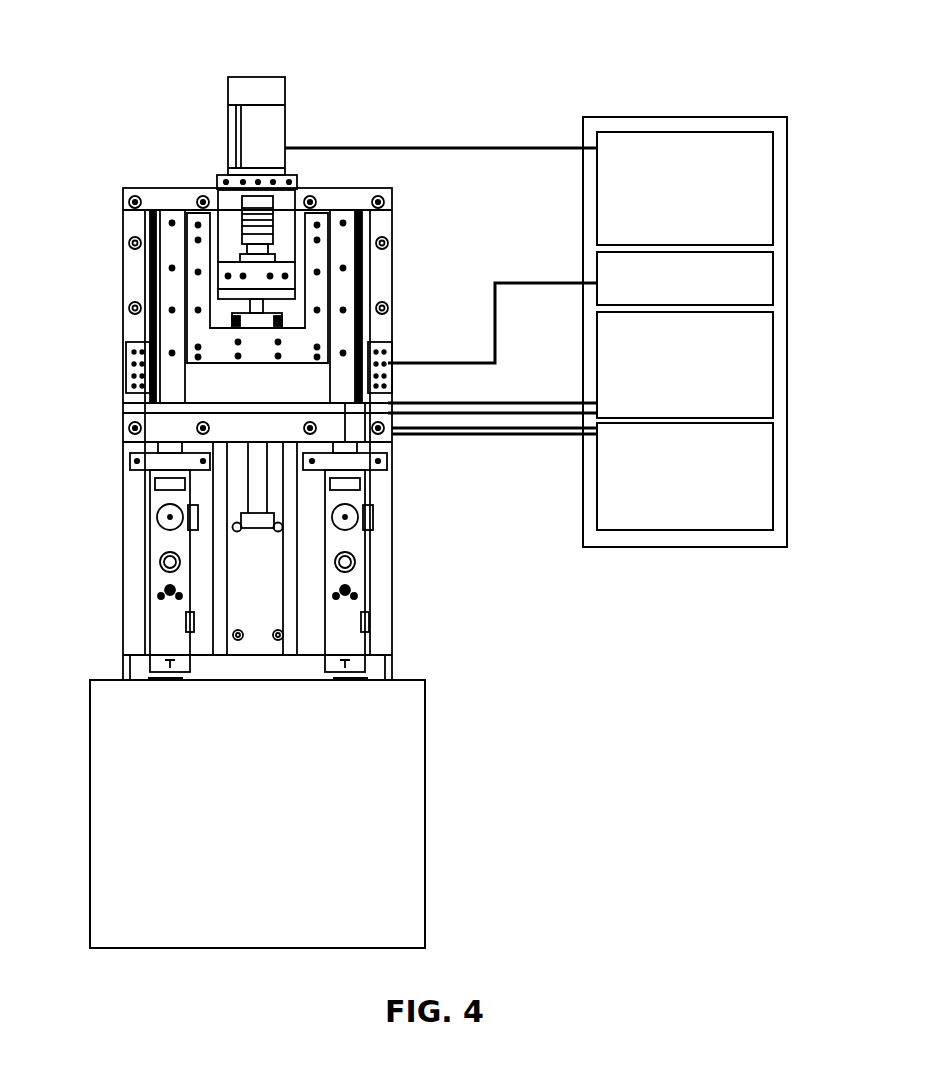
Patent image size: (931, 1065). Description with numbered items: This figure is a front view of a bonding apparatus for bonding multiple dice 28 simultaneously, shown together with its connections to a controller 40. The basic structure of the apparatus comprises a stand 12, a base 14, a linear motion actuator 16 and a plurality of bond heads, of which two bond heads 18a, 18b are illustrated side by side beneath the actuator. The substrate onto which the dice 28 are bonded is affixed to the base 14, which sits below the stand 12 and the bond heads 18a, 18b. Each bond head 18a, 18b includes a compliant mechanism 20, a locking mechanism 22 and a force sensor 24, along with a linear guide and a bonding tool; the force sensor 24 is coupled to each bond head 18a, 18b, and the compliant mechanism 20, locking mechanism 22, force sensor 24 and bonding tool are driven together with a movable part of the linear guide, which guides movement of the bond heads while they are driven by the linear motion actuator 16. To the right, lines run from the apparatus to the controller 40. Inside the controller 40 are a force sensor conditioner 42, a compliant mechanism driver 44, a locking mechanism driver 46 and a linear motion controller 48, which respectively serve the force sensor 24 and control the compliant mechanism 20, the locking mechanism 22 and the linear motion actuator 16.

The stand 12 is at (120, 185).
The base 14 is at (118, 806).
The linear motion actuator 16 is at (265, 130).
The bond head 18a is at (405, 628).
The bond head 18b is at (120, 628).
The compliant mechanism 20 is at (352, 378).
The locking mechanism 22 is at (390, 338).
The force sensor 24 is at (165, 432).
The dice 28 is at (352, 681).
The controller 40 is at (711, 290).
The force sensor conditioner 42 is at (758, 465).
The compliant mechanism driver 44 is at (758, 360).
The locking mechanism driver 46 is at (757, 288).
The linear motion controller 48 is at (757, 183).